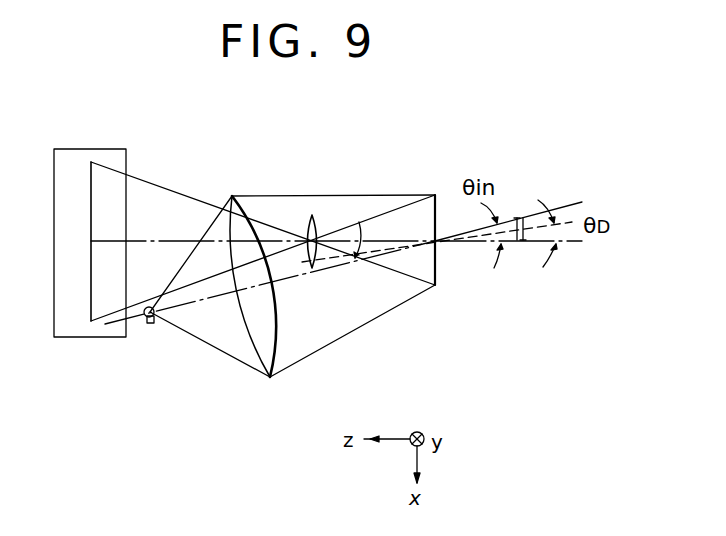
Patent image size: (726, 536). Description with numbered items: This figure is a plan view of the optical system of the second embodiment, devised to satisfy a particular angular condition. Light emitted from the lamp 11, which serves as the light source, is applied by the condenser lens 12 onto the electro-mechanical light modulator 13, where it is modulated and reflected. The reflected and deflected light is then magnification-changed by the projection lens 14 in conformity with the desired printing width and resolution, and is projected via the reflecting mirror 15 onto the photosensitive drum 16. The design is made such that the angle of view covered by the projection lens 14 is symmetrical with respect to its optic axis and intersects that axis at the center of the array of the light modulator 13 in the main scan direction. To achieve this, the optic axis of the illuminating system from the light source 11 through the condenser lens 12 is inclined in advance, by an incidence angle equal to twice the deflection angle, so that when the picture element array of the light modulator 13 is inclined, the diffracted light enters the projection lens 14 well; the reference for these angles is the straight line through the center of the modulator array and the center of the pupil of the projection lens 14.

The lamp 11 is at (148, 323).
The condenser lens 12 is at (243, 212).
The electro-mechanical light modulator 13 is at (435, 267).
The projection lens 14 is at (315, 257).
The reflecting mirror 15 is at (90, 176).
The photosensitive drum 16 is at (84, 337).